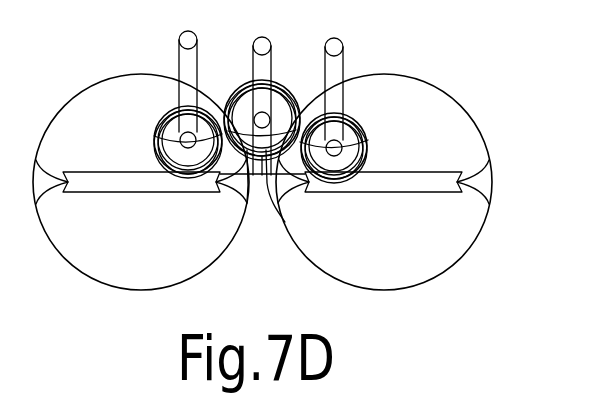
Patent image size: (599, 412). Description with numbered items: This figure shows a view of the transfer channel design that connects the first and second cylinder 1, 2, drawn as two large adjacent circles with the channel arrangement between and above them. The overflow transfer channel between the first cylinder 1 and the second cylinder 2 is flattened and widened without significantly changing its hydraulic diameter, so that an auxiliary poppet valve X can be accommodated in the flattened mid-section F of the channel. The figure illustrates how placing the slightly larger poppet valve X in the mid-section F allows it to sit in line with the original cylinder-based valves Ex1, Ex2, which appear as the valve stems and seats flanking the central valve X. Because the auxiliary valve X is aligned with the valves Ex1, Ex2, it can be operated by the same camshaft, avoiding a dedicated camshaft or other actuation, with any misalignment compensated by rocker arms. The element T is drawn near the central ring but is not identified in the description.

The first cylinder 1 is at (103, 260).
The second cylinder 2 is at (463, 243).
The exhaust port valve Ex1 is at (350, 110).
The exhaust port valve Ex2 is at (158, 137).
The toroidal ring T is at (287, 77).
The auxiliary poppet valve X is at (243, 92).
The flattened mid-section of the transfer channel F is at (256, 150).